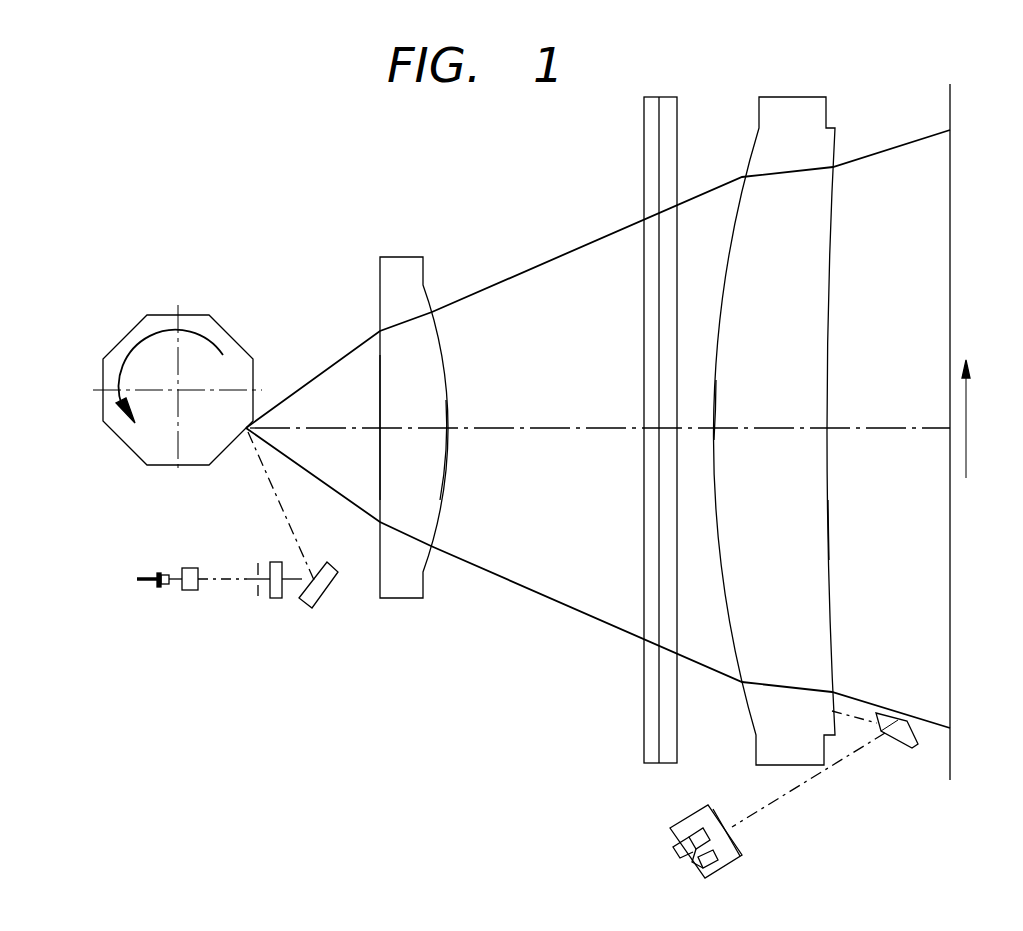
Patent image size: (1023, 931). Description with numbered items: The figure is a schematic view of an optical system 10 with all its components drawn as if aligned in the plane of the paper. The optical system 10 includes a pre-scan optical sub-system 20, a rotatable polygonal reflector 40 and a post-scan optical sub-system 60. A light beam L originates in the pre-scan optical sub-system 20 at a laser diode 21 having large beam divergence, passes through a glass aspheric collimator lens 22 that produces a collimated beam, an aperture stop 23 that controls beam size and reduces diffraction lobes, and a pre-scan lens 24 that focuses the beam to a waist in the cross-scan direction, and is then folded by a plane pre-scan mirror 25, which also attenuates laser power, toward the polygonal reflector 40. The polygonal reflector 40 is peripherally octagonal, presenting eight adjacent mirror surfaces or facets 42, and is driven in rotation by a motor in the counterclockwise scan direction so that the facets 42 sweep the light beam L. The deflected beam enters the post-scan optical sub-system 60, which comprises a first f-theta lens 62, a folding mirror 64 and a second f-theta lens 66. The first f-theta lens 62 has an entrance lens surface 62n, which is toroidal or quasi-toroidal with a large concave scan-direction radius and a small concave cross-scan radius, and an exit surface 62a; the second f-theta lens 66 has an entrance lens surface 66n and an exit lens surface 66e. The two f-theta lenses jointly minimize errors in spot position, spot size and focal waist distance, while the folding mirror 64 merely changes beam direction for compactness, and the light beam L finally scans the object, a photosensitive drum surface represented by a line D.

The optical system 10 is at (249, 212).
The pre-scan optical sub-system 20 is at (235, 561).
The laser diode 21 is at (165, 573).
The glass aspheric collimator lens 22 is at (190, 566).
The aperture stop 23 is at (257, 572).
The pre-scan lens 24 is at (279, 599).
The plane pre-scan mirror 25 is at (325, 597).
The rotatable polygonal reflector 40 is at (181, 373).
The mirror surfaces or facets 42 is at (132, 336).
The post-scan optical sub-system 60 is at (778, 36).
The first f-theta lens 62 is at (400, 257).
The entrance lens surface of first f-theta lens 62n is at (380, 378).
The exit surface of first lens 62a is at (446, 463).
The folding mirror 64 is at (650, 150).
The second f-theta lens 66 is at (808, 83).
The entrance lens surface of second f-theta lens 66n is at (715, 348).
The exit lens surface of second f-theta lens 66e is at (826, 520).
The light beam L is at (498, 287).
The line representing photosensitive drum surface D is at (953, 557).